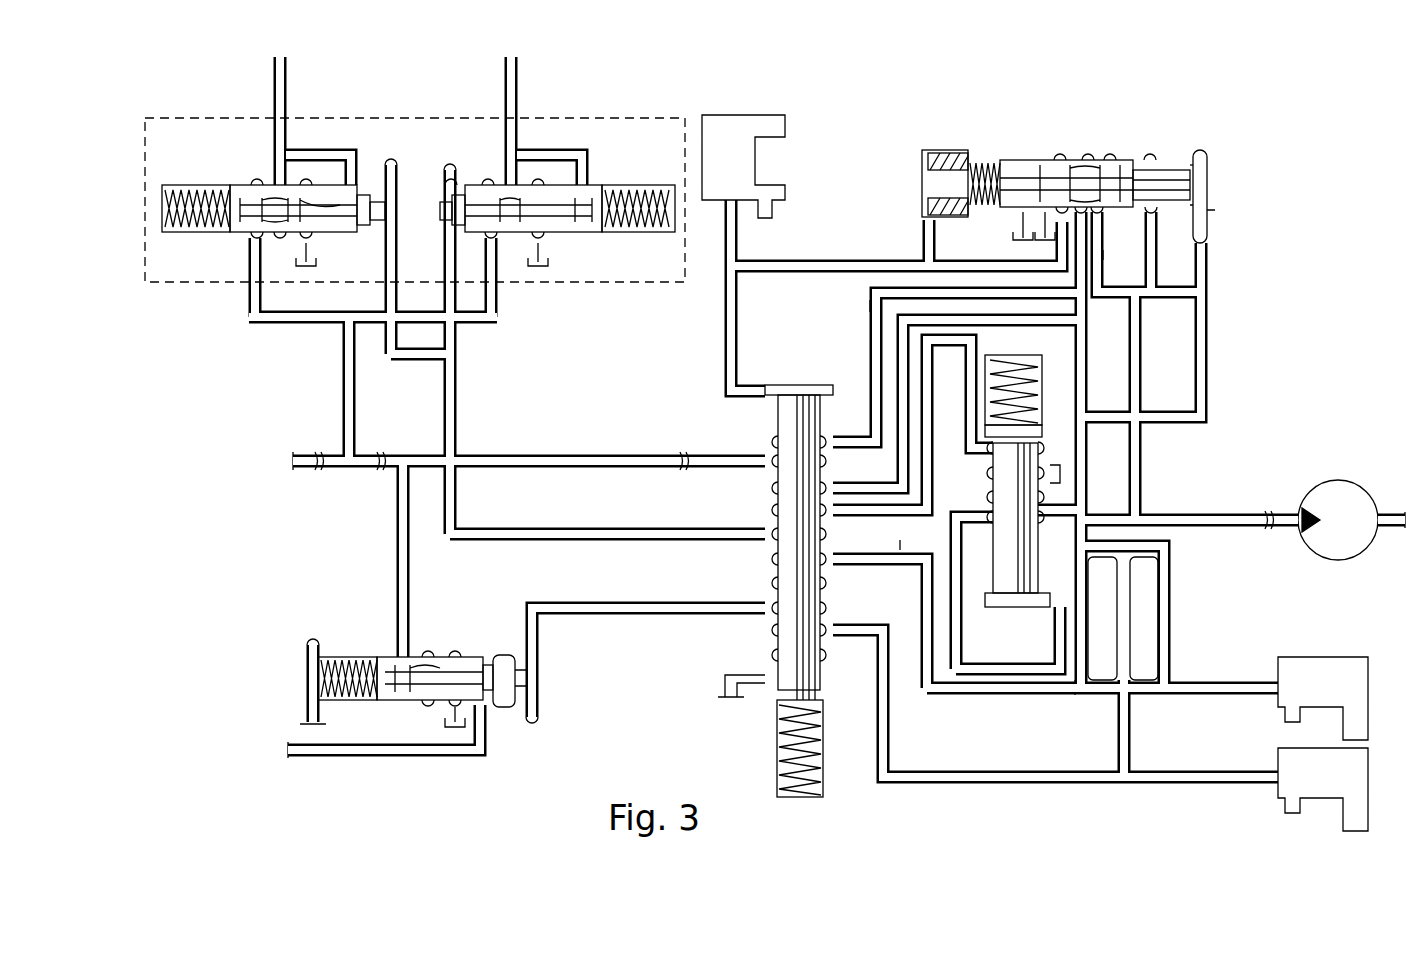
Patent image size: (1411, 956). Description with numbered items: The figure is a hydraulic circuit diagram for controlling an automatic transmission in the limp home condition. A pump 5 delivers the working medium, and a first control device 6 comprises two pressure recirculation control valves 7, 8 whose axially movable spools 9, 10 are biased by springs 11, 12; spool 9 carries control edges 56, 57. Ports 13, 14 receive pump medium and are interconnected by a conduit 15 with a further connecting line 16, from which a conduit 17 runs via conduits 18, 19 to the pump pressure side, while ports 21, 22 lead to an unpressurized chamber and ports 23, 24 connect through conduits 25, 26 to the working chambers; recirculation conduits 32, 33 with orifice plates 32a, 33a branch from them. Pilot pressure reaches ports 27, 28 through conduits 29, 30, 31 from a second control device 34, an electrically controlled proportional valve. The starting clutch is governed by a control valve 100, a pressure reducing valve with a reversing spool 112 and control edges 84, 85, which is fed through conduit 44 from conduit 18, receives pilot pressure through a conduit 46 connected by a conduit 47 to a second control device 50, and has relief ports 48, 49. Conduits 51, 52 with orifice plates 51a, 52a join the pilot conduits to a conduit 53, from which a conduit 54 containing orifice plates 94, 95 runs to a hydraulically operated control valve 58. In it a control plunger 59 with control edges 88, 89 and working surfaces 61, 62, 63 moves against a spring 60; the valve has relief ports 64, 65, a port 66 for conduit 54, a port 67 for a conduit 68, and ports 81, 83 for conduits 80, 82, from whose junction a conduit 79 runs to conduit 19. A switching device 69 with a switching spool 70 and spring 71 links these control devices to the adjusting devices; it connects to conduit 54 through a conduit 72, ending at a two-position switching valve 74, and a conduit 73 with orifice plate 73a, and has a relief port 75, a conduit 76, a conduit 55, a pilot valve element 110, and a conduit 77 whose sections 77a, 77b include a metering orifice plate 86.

The pump 5 is at (1325, 478).
The first control device 6 is at (418, 116).
The pressure recirculation control valve 7 is at (269, 198).
The pressure recirculation control valve 8 is at (558, 219).
The spool 9 is at (242, 225).
The spool 10 is at (552, 225).
The spring 11 is at (177, 232).
The spring 12 is at (667, 230).
The port 13 is at (252, 240).
The port 14 is at (497, 240).
The conduit 15 is at (290, 323).
The output line 16 is at (478, 323).
The conduit 17 is at (345, 422).
The conduit 18 is at (515, 455).
The conduit 19 is at (835, 475).
The port 21 is at (308, 237).
The port 22 is at (547, 235).
The port 23 is at (278, 178).
The port 24 is at (510, 182).
The conduit 25 is at (283, 83).
The conduit 26 is at (517, 83).
The port 27 is at (400, 245).
The port 28 is at (450, 237).
The conduit 29 is at (403, 360).
The conduit 30 is at (515, 527).
The conduit 31 is at (905, 550).
The conduit 32 is at (337, 150).
The orifice plate 32a is at (313, 150).
The conduit 33 is at (573, 150).
The orifice plate 33a is at (543, 150).
The second control device 34 is at (1323, 698).
The conduit 44 is at (402, 583).
The conduit 46 is at (548, 602).
The conduit 47 is at (858, 628).
The port 48 is at (457, 722).
The port 49 is at (307, 720).
The second control device 50 is at (1323, 789).
The conduit 51 is at (1170, 600).
The orifice plate 51a is at (1170, 580).
The conduit 52 is at (1132, 728).
The orifice plate 52a is at (1160, 620).
The conduit 53 is at (888, 522).
The conduit 54 is at (1085, 352).
The conduit 55 is at (978, 685).
The control edge 56 is at (263, 203).
The control edge 57 is at (297, 217).
The control valve 58 is at (1070, 162).
The control plunger 59 is at (1167, 177).
The spring 60 is at (997, 160).
The first working surface 61 is at (943, 180).
The second working surface 62 is at (1143, 170).
The third working surface 63 is at (1207, 165).
The port 64 is at (1017, 223).
The port 65 is at (1042, 230).
The port 66 is at (1082, 203).
The port 67 is at (1210, 215).
The conduit 68 is at (1207, 300).
The switching device 69 is at (794, 560).
The switching spool 70 is at (803, 675).
The spring 71 is at (822, 735).
The conduit 72 is at (735, 338).
The conduit 73 is at (807, 270).
The orifice plate 73a is at (773, 263).
The 2/2 switching valve 74 is at (743, 166).
The port 75 is at (768, 655).
The conduit 76 is at (947, 595).
The conduit 77 is at (860, 310).
The section 77a is at (855, 393).
The section 77b is at (990, 283).
The conduit 79 is at (1135, 353).
The conduit 80 is at (1103, 253).
The port 81 is at (1105, 213).
The conduit 82 is at (1150, 292).
The port 83 is at (1157, 214).
The control edge 84 is at (397, 657).
The control edge 85 is at (460, 655).
The metering orifice plate 86 is at (975, 300).
The control edge 88 is at (1043, 170).
The control edge 89 is at (1100, 203).
The orifice plate 94 is at (1080, 567).
The orifice plate 95 is at (1082, 690).
The control valve 100 is at (453, 701).
The pilot valve 110 is at (1012, 612).
The reversing spool 112 is at (388, 692).